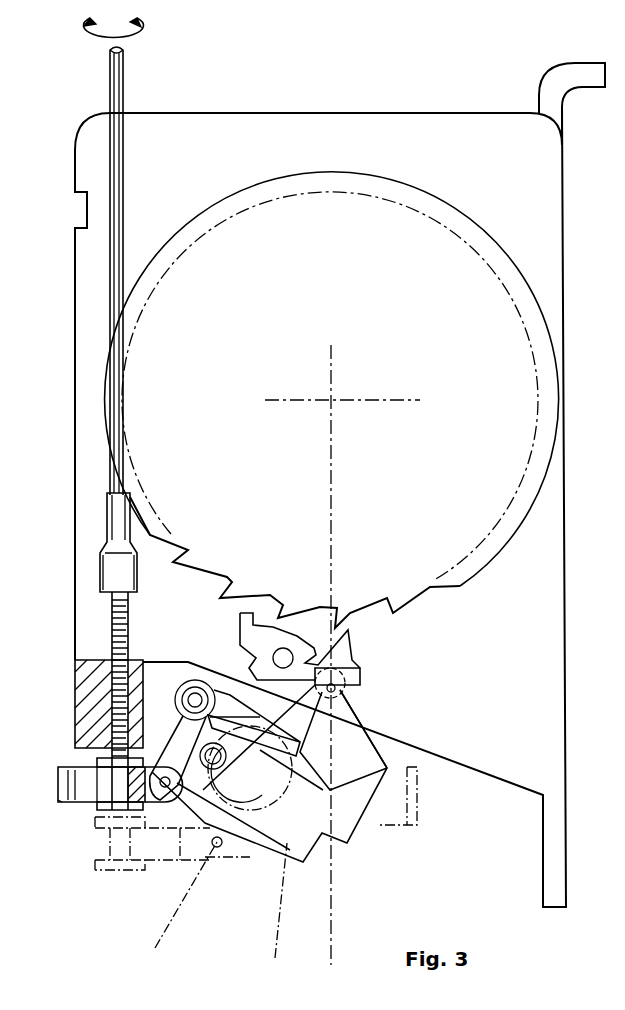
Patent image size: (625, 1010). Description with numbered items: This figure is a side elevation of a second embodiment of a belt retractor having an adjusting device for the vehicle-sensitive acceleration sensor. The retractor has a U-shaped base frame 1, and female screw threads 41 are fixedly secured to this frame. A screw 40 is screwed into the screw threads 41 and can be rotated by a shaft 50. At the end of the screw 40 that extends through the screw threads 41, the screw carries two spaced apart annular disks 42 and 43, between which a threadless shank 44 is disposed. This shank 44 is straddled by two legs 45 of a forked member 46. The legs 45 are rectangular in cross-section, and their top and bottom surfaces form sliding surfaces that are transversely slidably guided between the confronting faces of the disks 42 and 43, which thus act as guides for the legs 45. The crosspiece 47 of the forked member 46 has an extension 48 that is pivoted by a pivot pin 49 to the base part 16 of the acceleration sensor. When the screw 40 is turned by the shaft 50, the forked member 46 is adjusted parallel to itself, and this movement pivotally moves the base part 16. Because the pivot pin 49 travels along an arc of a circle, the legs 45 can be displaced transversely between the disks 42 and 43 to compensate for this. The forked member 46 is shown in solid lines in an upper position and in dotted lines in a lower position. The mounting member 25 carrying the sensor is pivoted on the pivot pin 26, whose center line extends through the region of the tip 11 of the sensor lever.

The base frame 1 is at (87, 512).
The tip 11 is at (340, 672).
The baseplate 16 is at (255, 845).
The mounting member 25 is at (385, 730).
The pivot pin 26 is at (365, 690).
The screw 40 is at (112, 614).
The female screw threads 41 is at (112, 693).
The annular disk 42 is at (97, 762).
The annular disk 43 is at (95, 808).
The threadless shank 44 is at (115, 780).
The legs 45 is at (62, 802).
The forked member 46 is at (135, 805).
The crosspiece 47 is at (217, 848).
The extension 48 is at (158, 755).
The pivot pin 49 is at (165, 745).
The shaft 50 is at (115, 345).